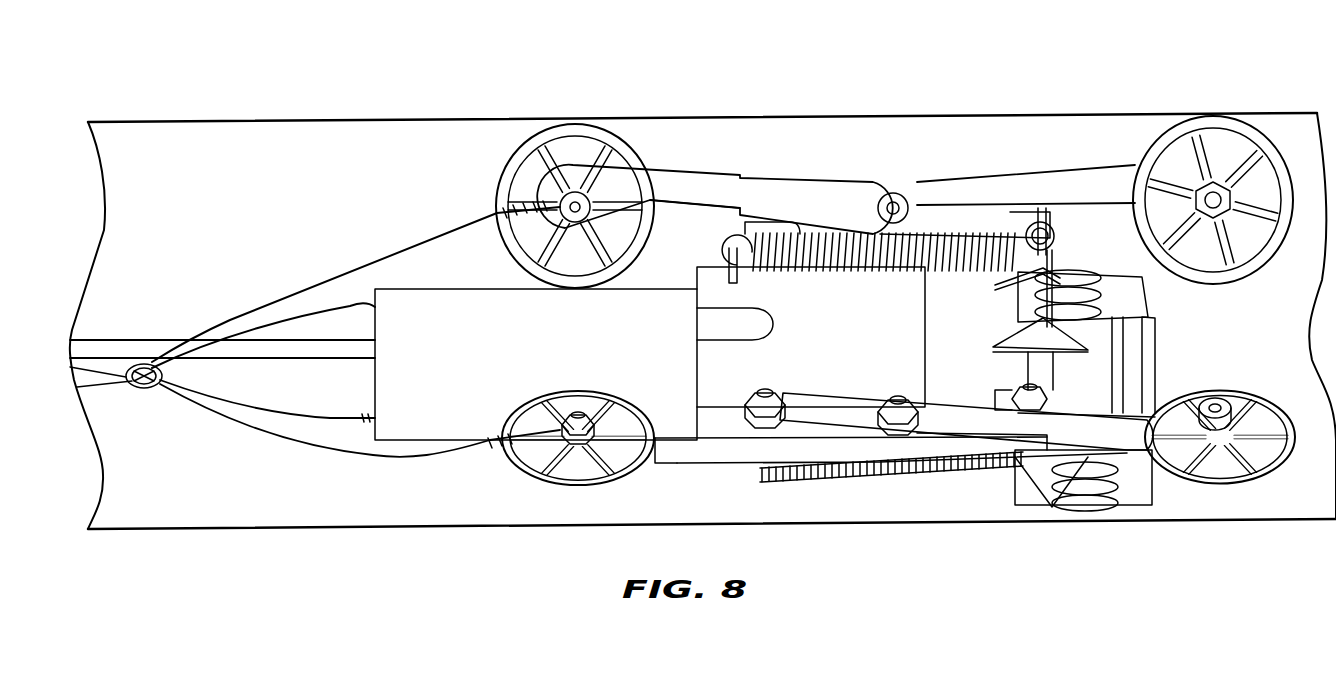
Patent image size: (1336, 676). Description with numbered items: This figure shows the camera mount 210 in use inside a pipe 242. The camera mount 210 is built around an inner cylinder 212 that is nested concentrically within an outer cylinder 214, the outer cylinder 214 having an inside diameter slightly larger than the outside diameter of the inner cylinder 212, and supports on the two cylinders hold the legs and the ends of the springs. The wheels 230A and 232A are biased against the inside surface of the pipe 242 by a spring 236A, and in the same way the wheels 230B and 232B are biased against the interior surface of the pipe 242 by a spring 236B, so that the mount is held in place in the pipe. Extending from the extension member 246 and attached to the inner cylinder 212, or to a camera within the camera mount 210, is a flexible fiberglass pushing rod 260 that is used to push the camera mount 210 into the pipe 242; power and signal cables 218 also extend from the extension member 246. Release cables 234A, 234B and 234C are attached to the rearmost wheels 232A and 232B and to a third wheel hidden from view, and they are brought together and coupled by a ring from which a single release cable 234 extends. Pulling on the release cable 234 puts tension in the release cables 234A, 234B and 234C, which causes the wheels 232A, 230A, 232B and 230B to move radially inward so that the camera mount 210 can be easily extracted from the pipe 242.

The camera mount 210 is at (1190, 362).
The inner cylinder 212 is at (972, 308).
The outer cylinder 214 is at (840, 383).
The power and signal cables 218 is at (313, 417).
The wheel 230A is at (1247, 284).
The wheel 230B is at (1268, 470).
The rearmost wheel 232A is at (645, 143).
The rearmost wheel 232B is at (543, 480).
The release cable 234 is at (103, 390).
The release cable 234A is at (320, 288).
The release cable 234B is at (348, 453).
The release cable 234C is at (342, 308).
The spring 236A is at (897, 272).
The spring 236B is at (870, 483).
The pipe 242 is at (1033, 117).
The extension member 246 is at (565, 332).
The flexible fiberglass pushing rod 260 is at (132, 340).